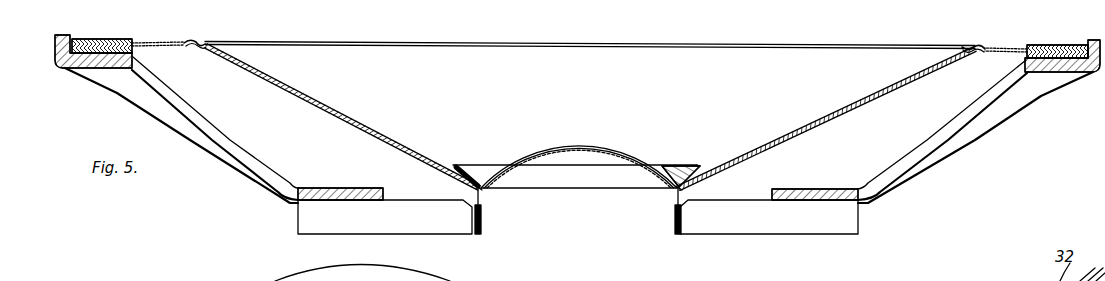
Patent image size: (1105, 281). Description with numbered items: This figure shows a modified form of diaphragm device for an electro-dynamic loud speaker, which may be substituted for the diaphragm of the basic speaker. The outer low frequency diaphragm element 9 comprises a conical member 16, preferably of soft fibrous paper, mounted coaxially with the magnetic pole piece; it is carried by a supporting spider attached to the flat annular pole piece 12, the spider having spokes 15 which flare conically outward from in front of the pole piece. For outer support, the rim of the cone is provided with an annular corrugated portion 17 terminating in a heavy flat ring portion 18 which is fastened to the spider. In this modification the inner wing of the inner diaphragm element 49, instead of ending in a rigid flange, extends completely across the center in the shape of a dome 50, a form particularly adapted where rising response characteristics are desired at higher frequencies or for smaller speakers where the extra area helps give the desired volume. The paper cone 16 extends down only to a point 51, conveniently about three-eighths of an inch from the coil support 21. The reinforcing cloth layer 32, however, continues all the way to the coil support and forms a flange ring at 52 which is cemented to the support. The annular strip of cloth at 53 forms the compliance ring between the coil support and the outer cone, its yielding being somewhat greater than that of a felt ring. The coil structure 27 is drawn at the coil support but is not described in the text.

The outer low frequency diaphragm element 9 is at (640, 57).
The flat annular pole piece 12 is at (312, 222).
The spokes 15 is at (122, 90).
The conical member 16 is at (873, 94).
The annular corrugated portion 17 is at (190, 42).
The heavy flat ring portion 18 is at (156, 42).
The coil support 21 is at (483, 201).
The voice coil 27 is at (673, 233).
The reinforcing cloth layer 32 is at (818, 118).
The inner diaphragm element 49 is at (481, 171).
The dome 50 is at (618, 155).
The point 51 is at (450, 182).
The flange ring 52 is at (673, 204).
The annular strip of cloth 53 is at (703, 188).